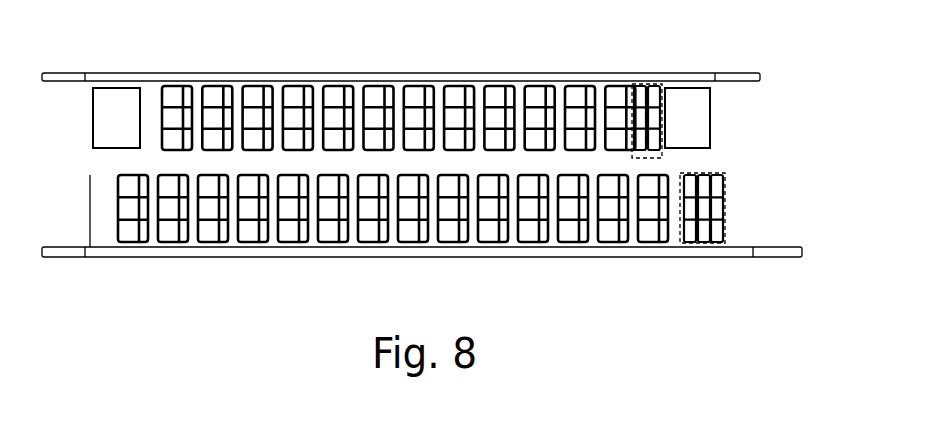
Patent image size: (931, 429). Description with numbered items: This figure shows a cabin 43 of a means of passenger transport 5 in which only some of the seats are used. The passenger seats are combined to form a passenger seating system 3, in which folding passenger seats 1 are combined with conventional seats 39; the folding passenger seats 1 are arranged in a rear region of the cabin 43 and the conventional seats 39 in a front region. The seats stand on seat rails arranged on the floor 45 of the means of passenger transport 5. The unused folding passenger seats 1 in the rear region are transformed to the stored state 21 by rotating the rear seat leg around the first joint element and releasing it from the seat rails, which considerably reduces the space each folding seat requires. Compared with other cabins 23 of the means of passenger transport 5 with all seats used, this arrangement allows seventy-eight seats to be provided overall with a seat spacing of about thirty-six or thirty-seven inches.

The folding passenger seat 1 is at (641, 90).
The passenger seating system 3 is at (141, 259).
The means of passenger transport 5 is at (632, 258).
The stored state 21 is at (672, 115).
The cabin 23 is at (252, 80).
The conventional seat 39 is at (491, 92).
The cabin 43 is at (122, 160).
The floor 45 is at (155, 168).